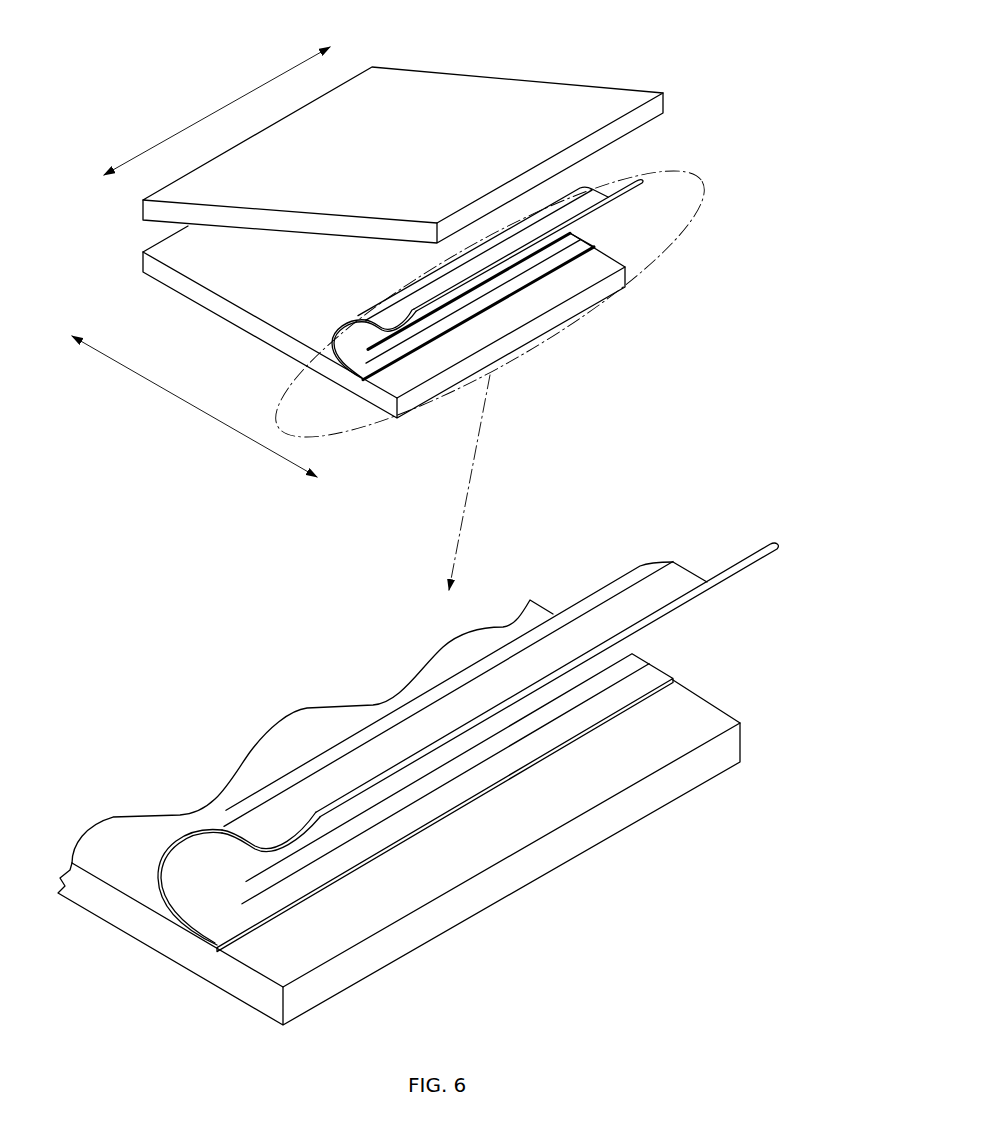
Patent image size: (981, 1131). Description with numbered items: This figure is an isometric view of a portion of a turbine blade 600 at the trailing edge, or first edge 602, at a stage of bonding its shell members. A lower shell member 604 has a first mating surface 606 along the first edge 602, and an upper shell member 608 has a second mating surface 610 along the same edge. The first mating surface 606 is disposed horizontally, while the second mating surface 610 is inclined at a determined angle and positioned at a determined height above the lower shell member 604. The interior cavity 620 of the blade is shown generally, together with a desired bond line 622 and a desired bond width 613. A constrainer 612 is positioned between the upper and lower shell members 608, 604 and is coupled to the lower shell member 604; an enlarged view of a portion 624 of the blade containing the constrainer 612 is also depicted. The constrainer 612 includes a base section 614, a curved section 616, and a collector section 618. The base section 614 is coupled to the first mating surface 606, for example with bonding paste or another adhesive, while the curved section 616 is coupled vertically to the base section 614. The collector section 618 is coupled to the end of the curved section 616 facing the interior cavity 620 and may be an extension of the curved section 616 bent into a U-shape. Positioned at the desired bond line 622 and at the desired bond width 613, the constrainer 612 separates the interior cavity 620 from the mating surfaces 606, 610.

The turbine blade 600 is at (175, 58).
The first edge 602 is at (145, 230).
The lower shell member 604 is at (148, 293).
The first mating surface 606 is at (233, 273).
The upper shell member 608 is at (240, 159).
The second mating surface 610 is at (358, 257).
The constrainer 612 is at (333, 325).
The desired bond width 613 is at (188, 400).
The base section 614 is at (665, 693).
The curved section 616 is at (190, 892).
The collector section 618 is at (483, 253).
The interior cavity 620 is at (515, 313).
The desired bond line 622 is at (183, 127).
The portion 624 is at (703, 183).